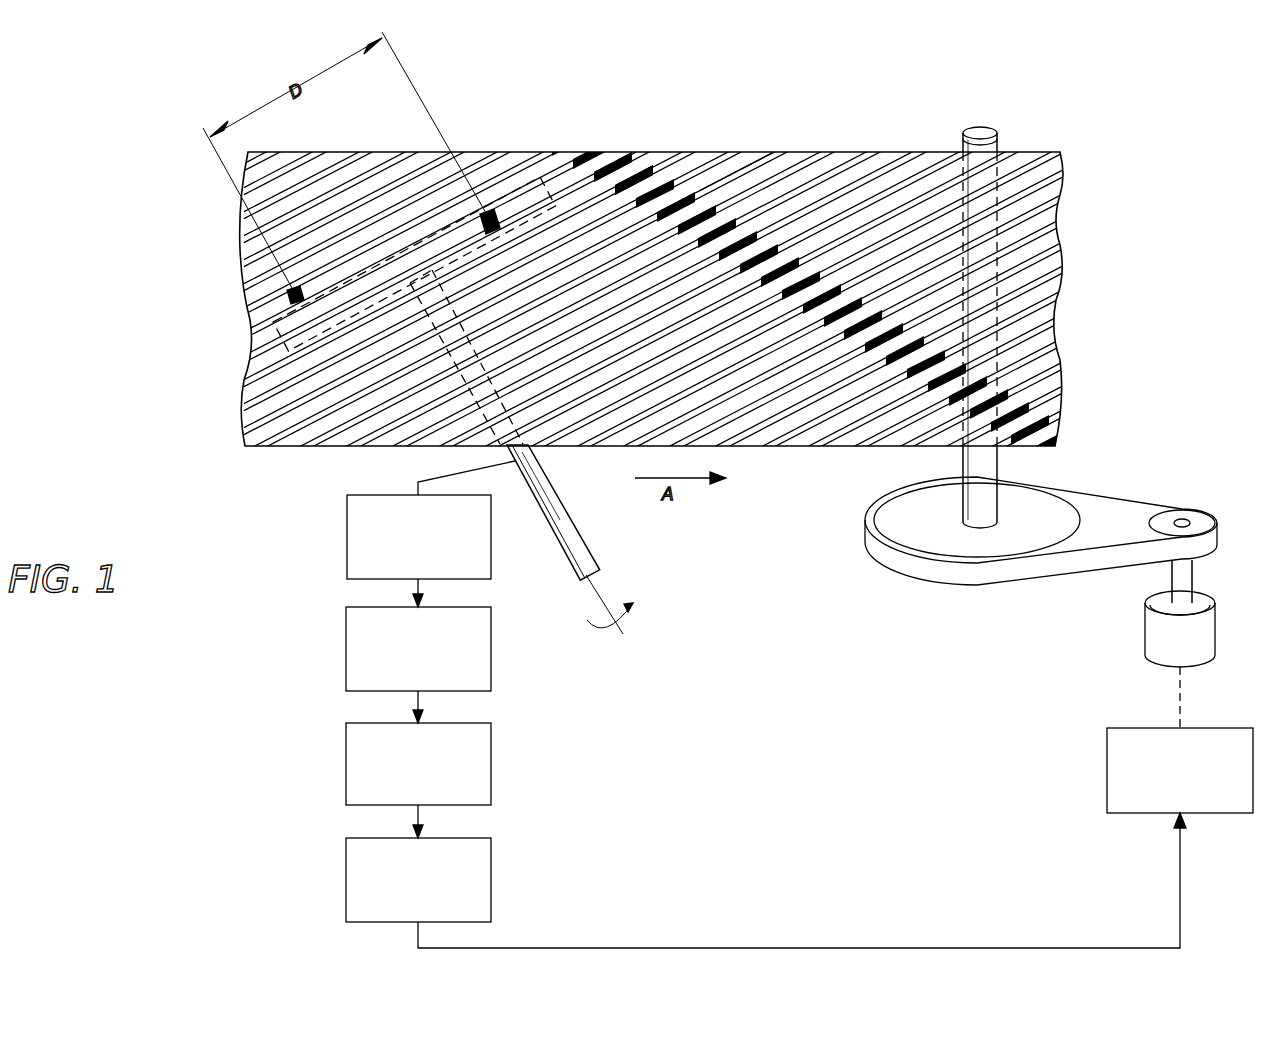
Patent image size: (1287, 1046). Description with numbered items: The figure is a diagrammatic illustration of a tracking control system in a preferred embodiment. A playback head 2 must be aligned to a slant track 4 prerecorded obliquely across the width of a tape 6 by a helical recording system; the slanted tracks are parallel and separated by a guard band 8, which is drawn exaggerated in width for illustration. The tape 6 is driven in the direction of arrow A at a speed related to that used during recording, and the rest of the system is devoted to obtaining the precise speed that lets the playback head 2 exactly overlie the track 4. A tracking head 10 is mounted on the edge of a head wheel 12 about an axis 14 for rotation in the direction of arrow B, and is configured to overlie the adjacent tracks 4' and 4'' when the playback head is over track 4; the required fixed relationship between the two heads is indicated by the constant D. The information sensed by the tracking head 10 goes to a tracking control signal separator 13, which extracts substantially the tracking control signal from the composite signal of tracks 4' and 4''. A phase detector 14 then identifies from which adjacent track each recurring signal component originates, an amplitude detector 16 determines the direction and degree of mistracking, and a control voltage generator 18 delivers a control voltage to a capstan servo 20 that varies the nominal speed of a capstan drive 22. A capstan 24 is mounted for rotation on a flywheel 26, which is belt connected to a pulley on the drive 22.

The playback head 2 is at (287, 298).
The slant track 4 is at (808, 287).
The adjacent track 4' is at (630, 148).
The adjacent track 4'' is at (664, 154).
The tape 6 is at (813, 151).
The guard band 8 is at (753, 151).
The tracking head 10 is at (489, 211).
The head wheel 12 is at (270, 336).
The tracking control signal separator 13 is at (347, 519).
The phase detector 14 is at (620, 624).
The amplitude detector 16 is at (346, 765).
The control voltage generator 18 is at (346, 881).
The capstan servo 20 is at (1107, 761).
The capstan drive 22 is at (1160, 633).
The capstan 24 is at (998, 133).
The flywheel 26 is at (890, 515).